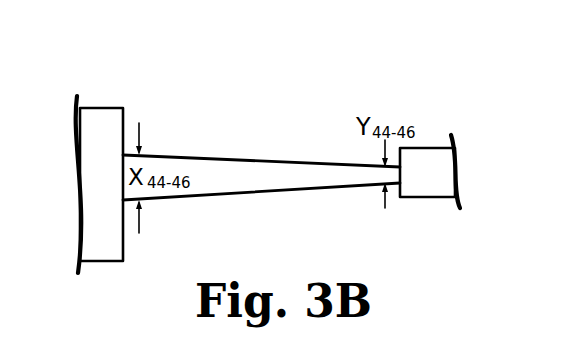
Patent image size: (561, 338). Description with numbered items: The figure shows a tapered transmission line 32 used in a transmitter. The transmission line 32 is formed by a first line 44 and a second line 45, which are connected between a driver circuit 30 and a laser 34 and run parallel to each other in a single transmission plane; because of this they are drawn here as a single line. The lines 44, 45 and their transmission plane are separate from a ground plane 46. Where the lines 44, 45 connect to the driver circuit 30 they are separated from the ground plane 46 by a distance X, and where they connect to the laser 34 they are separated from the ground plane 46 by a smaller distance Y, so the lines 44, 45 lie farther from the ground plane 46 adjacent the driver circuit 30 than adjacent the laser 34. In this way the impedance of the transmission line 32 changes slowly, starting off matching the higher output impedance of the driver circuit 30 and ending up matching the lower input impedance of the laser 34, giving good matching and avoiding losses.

The driver circuit 30 is at (92, 108).
The transmission line 32 is at (204, 70).
The laser 34 is at (420, 148).
The first line 44 is at (215, 157).
The second line 45 is at (258, 160).
The ground plane 46 is at (233, 197).